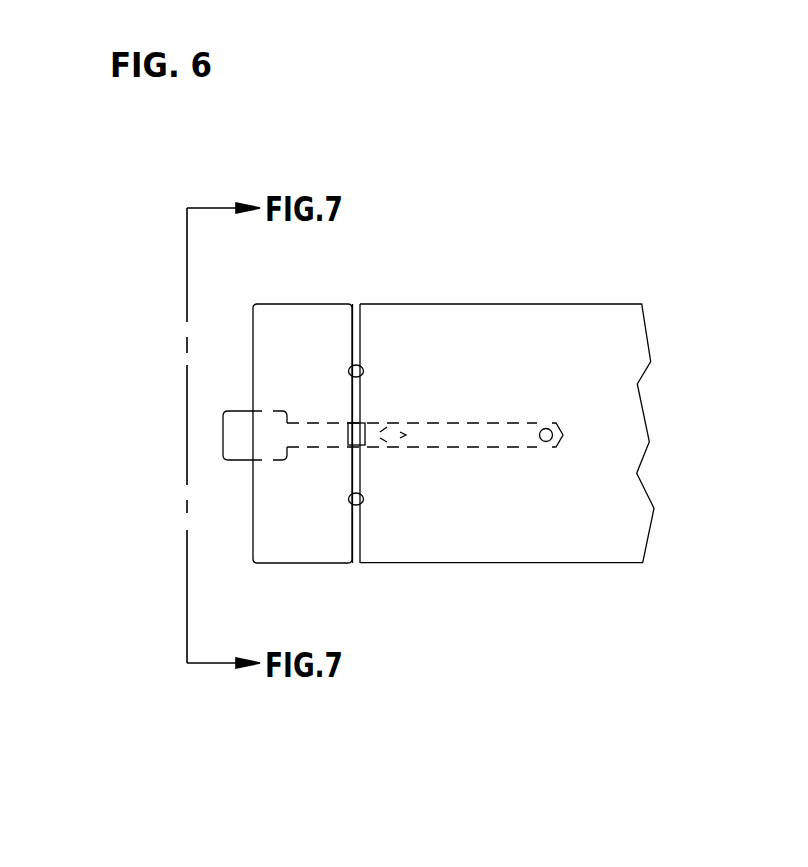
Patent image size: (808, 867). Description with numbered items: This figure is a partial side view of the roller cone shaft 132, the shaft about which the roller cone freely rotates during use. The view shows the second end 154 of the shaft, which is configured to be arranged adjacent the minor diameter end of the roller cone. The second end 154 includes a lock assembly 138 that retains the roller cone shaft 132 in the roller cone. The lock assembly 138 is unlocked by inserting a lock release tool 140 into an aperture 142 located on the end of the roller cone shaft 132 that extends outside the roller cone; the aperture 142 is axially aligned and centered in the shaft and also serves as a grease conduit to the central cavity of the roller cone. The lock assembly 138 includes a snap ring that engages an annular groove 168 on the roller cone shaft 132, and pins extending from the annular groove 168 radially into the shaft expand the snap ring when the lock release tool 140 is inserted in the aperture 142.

The roller cone shaft 132 is at (524, 362).
The lock assembly 138 is at (453, 421).
The lock release tool 140 is at (242, 420).
The aperture 142 is at (478, 436).
The second end 154 is at (302, 290).
The annular groove 168 is at (360, 292).